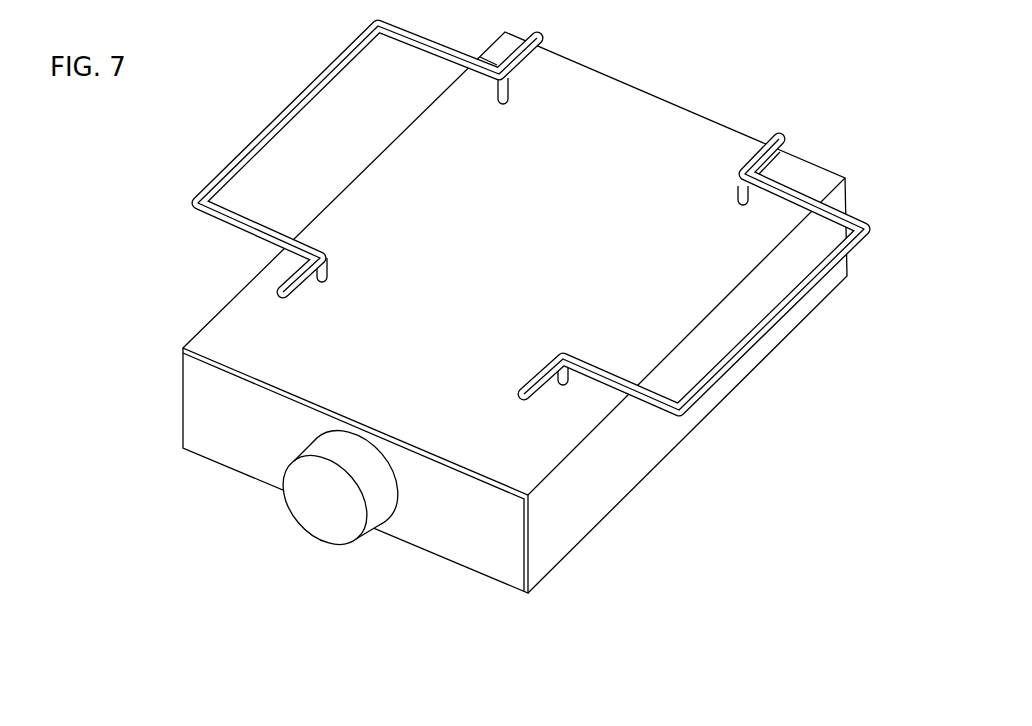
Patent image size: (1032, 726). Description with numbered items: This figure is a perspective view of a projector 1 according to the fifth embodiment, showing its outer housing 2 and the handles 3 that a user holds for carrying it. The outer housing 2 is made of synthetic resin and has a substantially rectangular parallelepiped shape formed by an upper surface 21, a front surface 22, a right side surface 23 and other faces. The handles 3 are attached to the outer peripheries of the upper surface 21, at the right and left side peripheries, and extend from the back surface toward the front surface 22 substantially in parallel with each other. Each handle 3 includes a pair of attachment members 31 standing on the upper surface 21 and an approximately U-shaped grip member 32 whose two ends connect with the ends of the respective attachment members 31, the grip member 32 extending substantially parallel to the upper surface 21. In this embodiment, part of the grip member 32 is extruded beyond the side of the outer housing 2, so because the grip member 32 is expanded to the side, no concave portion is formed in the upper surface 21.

The projector 1 is at (662, 80).
The outer housing 2 is at (221, 318).
The upper surface 21 is at (708, 130).
The front surface 22 is at (440, 543).
The right side surface 23 is at (612, 480).
The handle 3 is at (792, 300).
The attachment member 31 is at (498, 96).
The grip member 32 is at (277, 120).